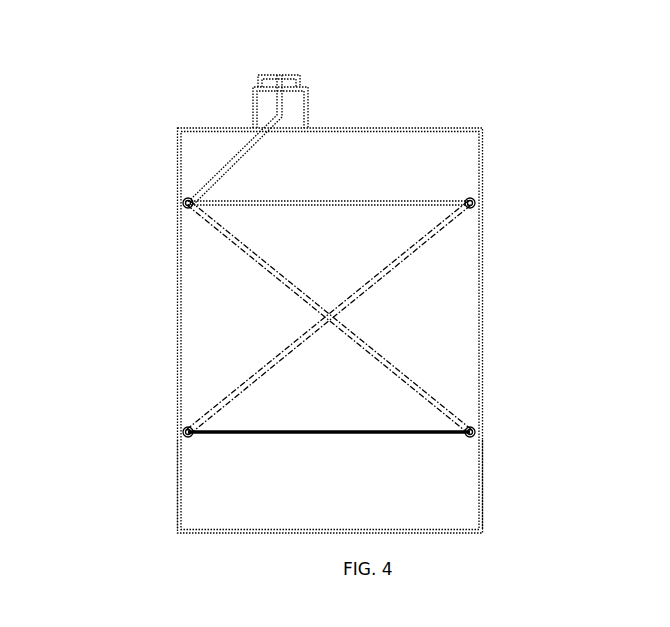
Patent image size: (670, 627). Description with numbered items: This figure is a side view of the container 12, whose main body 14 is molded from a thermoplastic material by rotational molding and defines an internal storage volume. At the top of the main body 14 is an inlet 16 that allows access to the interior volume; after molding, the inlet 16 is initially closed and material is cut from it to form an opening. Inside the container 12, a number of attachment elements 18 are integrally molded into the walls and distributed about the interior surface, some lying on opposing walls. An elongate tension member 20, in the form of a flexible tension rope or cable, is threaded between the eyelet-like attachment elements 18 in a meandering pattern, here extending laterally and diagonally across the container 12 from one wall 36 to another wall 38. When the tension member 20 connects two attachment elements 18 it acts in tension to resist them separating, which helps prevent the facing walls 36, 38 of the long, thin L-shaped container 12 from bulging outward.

The container 12 is at (126, 222).
The main body 14 is at (482, 328).
The inlet 16 is at (252, 105).
The attachment elements 18 is at (478, 203).
The tension member 20 is at (420, 389).
The wall 36 is at (172, 477).
The wall 38 is at (483, 477).